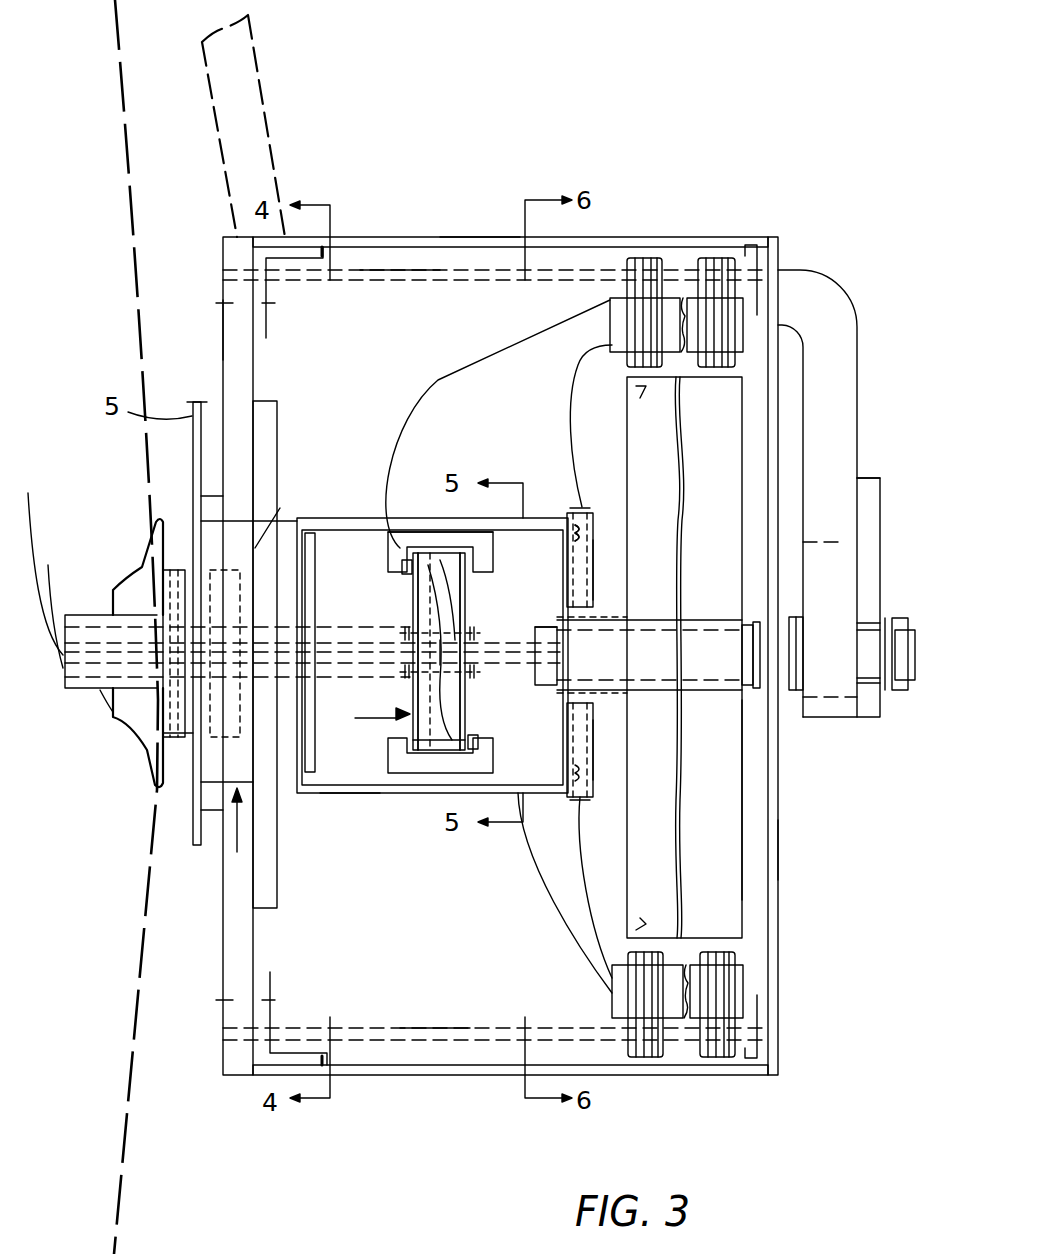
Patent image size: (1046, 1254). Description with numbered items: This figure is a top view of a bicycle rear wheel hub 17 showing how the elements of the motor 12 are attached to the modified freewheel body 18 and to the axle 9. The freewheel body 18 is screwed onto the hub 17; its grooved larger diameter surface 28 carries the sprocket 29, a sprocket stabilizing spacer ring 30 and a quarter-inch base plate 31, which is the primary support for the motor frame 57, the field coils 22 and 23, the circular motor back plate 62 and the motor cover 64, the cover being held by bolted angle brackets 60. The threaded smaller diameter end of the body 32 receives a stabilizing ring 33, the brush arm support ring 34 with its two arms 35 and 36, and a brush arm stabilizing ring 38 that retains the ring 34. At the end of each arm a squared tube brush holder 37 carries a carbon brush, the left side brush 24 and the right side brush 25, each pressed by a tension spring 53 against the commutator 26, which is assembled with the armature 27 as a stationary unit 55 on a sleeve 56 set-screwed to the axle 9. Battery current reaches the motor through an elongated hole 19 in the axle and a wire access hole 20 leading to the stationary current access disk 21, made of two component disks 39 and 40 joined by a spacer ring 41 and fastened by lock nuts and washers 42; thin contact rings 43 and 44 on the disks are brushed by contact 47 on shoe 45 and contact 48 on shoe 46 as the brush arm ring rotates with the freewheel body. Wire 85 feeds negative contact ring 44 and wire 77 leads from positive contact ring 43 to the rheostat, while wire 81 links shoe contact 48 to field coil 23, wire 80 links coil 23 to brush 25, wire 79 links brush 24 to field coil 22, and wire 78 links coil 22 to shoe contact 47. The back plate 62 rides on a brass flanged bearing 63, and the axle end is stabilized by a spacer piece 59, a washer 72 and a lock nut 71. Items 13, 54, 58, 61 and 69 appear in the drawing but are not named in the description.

The axle 9 is at (100, 615).
The motor 12 is at (388, 1080).
The hose/rod 13 is at (263, 98).
The rear wheel hub 17 is at (140, 565).
The freewheel body 18 is at (224, 852).
The elongated hole 19 is at (100, 692).
The wire access hole 20 is at (442, 666).
The current access disk 21 is at (364, 717).
The left side field coil 22 is at (612, 352).
The right side field coil 23 is at (610, 996).
The left side motor brush 24 is at (568, 572).
The right side motor brush 25 is at (568, 732).
The commutator 26 is at (600, 618).
The armature 27 is at (627, 442).
The grooved larger diameter surface 28 is at (202, 518).
The sprocket 29 is at (197, 834).
The sprocket stabilizing spacer ring 30 is at (202, 490).
The base plate 31 is at (223, 340).
The smaller diameter end of the body 32 is at (279, 515).
The ring 33 is at (276, 446).
The brush arm support ring 34 is at (290, 532).
The arm 35 is at (398, 540).
The arm 36 is at (345, 790).
The brush holder 37 is at (600, 578).
The brush arm stabilizing ring 38 is at (320, 545).
The component disk 39 is at (418, 606).
The component disk 40 is at (466, 592).
The spacer ring 41 is at (437, 760).
The lock nuts and washers 42 is at (475, 646).
The contact ring 43 is at (400, 730).
The contact ring 44 is at (465, 706).
The contact shoe 45 is at (430, 528).
The contact shoe 46 is at (400, 778).
The left side shoe contact 47 is at (410, 572).
The right side shoe contact 48 is at (472, 742).
The tension spring 53 is at (590, 530).
The bearing retainer 54 is at (585, 512).
The commutator and armature unit 55 is at (748, 797).
The sleeve 56 is at (530, 622).
The motor frame 57 is at (712, 258).
The frame rail 58 is at (398, 270).
The spacer piece 59 is at (845, 542).
The angle brackets 60 is at (268, 334).
The fastener 61 is at (223, 303).
The motor back plate 62 is at (783, 848).
The brass flanged bearing 63 is at (798, 580).
The motor cover 64 is at (465, 237).
The bracket flange 69 is at (884, 484).
The lock nut 71 is at (798, 616).
The washer 72 is at (892, 612).
The wire 77 is at (51, 578).
The wire 78 is at (490, 352).
The wire 79 is at (576, 428).
The wire 80 is at (596, 906).
The wire 81 is at (546, 898).
The wire 85 is at (34, 548).